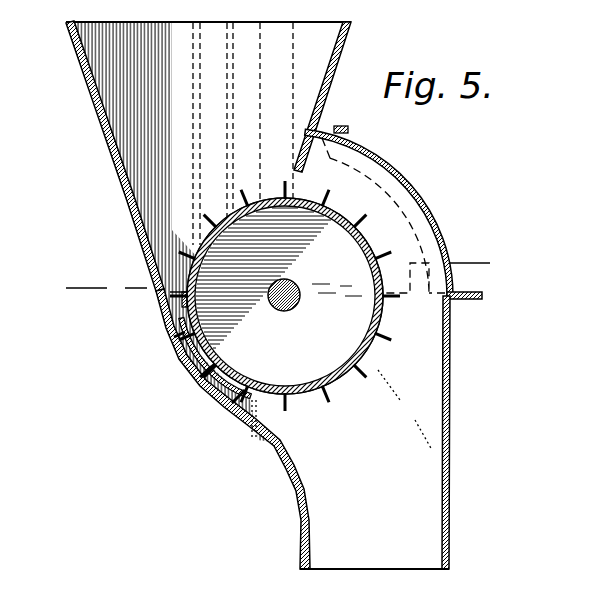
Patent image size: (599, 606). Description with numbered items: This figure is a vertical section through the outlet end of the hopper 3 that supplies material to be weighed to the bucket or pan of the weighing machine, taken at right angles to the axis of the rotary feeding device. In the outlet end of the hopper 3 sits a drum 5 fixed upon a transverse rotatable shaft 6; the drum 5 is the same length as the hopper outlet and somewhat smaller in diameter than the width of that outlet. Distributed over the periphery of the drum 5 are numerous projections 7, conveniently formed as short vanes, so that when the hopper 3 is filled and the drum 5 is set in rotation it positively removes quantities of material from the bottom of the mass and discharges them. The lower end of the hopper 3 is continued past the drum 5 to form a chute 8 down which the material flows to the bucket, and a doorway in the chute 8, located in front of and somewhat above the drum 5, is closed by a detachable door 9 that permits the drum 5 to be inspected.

The hopper 3 is at (128, 157).
The drum 5 is at (197, 361).
The transverse rotatable shaft 6 is at (299, 300).
The projections 7 is at (227, 400).
The chute 8 is at (432, 500).
The detachable door 9 is at (416, 193).